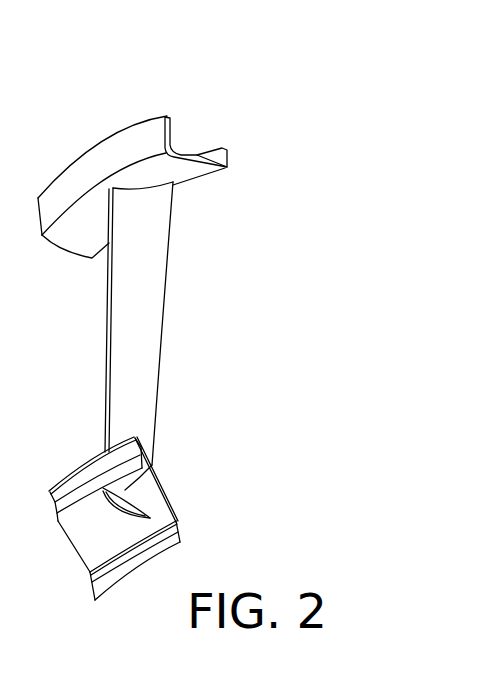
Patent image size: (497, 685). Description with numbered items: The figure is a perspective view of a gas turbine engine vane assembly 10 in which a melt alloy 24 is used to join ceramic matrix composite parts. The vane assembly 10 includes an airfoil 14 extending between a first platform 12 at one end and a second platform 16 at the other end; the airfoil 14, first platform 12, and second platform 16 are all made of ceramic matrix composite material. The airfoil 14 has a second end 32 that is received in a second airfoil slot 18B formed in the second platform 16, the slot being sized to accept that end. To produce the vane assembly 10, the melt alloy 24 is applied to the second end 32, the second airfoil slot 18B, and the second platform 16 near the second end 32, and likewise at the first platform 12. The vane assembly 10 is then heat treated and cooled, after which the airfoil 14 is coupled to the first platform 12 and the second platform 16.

The vane assembly 10 is at (207, 107).
The first platform 12 is at (133, 141).
The airfoil 14 is at (155, 240).
The second platform 16 is at (172, 532).
The second airfoil slot 18B is at (112, 506).
The melt alloy 24 is at (152, 465).
The second end 32 is at (105, 496).